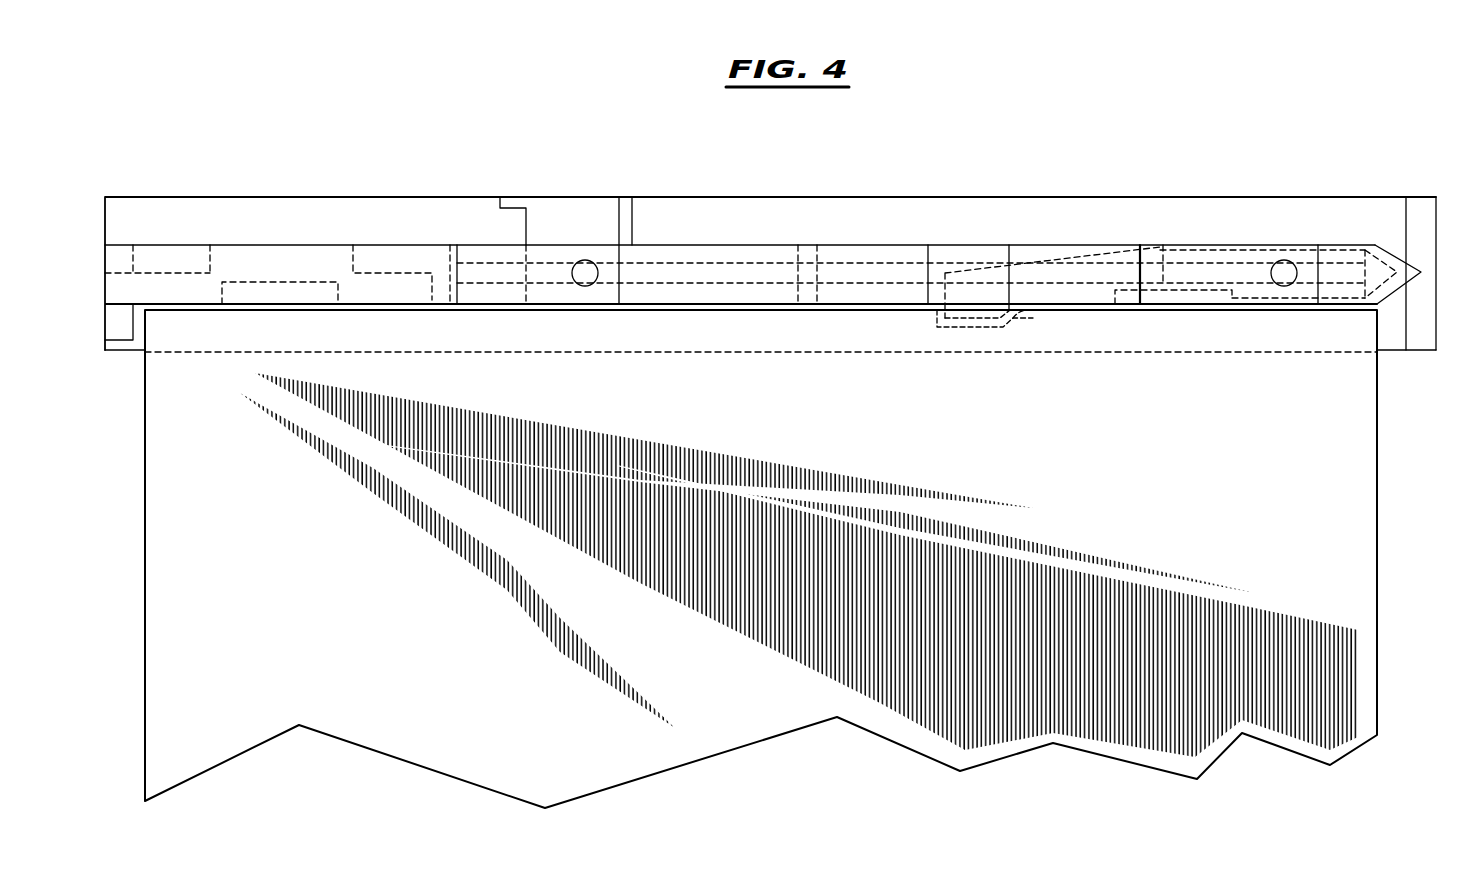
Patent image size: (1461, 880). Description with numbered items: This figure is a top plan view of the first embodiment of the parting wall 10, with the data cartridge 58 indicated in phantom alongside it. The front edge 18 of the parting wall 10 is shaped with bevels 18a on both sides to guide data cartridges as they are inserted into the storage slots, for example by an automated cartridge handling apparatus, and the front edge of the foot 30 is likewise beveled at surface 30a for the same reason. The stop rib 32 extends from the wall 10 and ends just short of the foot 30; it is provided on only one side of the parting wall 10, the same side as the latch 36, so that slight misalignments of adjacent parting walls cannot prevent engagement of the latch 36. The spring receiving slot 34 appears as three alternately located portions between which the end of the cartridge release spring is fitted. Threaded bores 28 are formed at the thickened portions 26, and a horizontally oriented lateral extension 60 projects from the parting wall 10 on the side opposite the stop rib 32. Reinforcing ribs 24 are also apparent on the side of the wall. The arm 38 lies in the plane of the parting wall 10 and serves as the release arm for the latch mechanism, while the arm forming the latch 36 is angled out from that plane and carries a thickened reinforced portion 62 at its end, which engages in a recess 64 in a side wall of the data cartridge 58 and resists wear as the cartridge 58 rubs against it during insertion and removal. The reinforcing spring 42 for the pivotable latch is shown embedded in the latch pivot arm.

The parting wall 10 is at (1038, 170).
The front edge 18 is at (1422, 272).
The bevel 18a is at (1394, 247).
The reinforcing rib 24 is at (812, 248).
The thickened portion 26 is at (604, 305).
The threaded bore 28 is at (590, 265).
The foot 30 is at (197, 197).
The beveled surface 30a is at (1418, 338).
The stop rib 32 is at (128, 340).
The spring receiving slot 34 is at (347, 275).
The latch 36 is at (1045, 262).
The arm 38 is at (1293, 250).
The reinforcing spring 42 is at (1163, 240).
The data cartridge 58 is at (1378, 483).
The lateral extension 60 is at (567, 215).
The thickened reinforced portion 62 is at (965, 322).
The recess 64 is at (1037, 313).